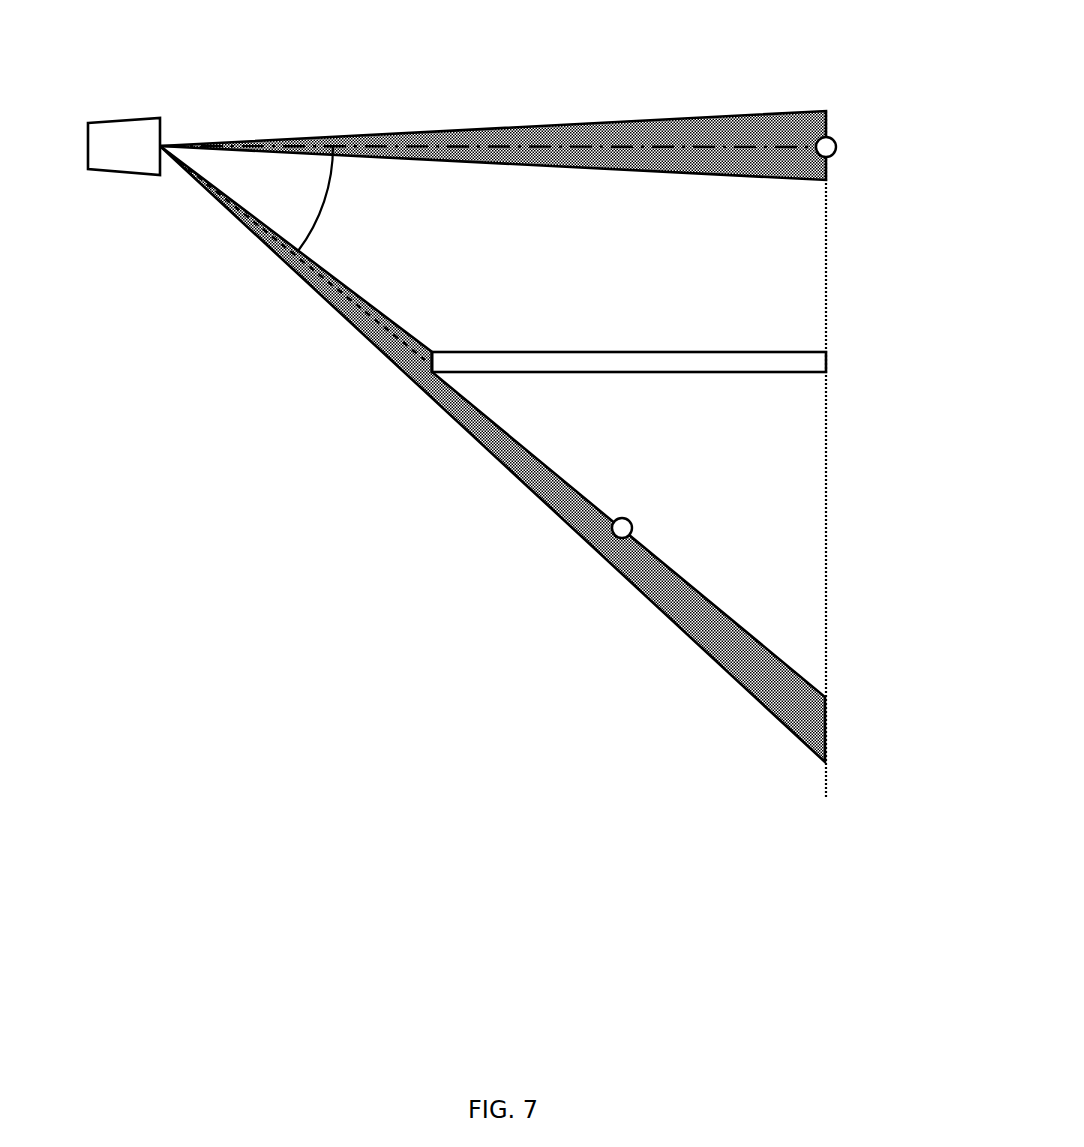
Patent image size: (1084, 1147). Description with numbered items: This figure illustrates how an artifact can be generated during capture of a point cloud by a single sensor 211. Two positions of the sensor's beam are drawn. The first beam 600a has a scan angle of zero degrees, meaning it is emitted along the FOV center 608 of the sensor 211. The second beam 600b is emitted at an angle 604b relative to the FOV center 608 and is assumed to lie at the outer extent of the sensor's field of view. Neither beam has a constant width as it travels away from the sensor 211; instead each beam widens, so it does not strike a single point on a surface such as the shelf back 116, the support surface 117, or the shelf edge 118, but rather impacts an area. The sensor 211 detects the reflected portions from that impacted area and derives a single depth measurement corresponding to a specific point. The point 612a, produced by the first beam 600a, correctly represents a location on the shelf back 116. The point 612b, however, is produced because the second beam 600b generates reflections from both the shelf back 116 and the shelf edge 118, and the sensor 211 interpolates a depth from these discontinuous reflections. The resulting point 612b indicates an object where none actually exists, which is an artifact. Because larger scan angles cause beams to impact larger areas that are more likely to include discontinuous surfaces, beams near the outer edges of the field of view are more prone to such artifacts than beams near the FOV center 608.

The sensor 211 is at (122, 172).
The beam 600a is at (493, 128).
The second beam 600b is at (507, 468).
The FOV center 608 is at (632, 146).
The angle 604b is at (324, 202).
The point 612a is at (824, 137).
The point 612b is at (624, 518).
The shelf back 116 is at (826, 283).
The support surface 117 is at (630, 352).
The shelf edge 118 is at (432, 362).